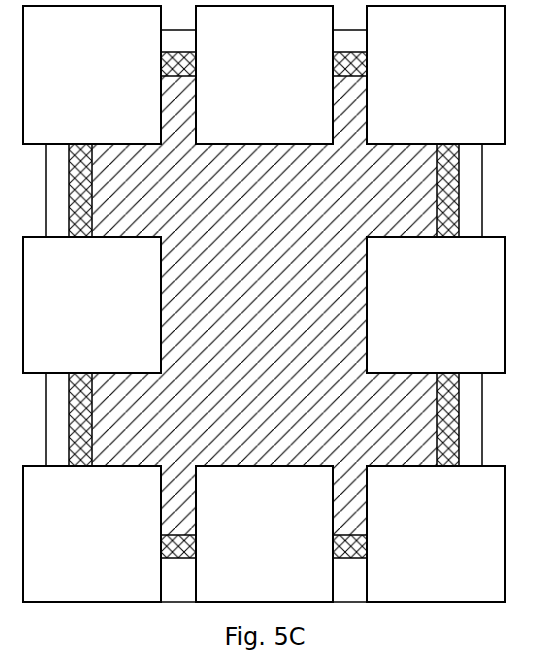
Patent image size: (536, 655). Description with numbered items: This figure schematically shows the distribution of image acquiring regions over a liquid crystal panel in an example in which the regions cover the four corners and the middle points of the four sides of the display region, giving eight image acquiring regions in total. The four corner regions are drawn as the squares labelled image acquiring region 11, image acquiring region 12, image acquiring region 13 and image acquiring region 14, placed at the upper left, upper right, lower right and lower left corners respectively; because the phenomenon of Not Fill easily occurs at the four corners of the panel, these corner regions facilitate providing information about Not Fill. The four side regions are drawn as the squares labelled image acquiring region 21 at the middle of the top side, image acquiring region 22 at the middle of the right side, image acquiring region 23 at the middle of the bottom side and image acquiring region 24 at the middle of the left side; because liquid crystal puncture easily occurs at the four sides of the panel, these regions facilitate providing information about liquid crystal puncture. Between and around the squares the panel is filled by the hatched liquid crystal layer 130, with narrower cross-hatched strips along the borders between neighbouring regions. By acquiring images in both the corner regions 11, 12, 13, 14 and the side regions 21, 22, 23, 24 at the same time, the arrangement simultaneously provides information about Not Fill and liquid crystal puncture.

The image acquiring region 11 is at (92, 75).
The image acquiring region 12 is at (436, 75).
The image acquiring region 13 is at (436, 534).
The image acquiring region 14 is at (92, 534).
The image acquiring region 21 is at (264, 75).
The image acquiring region 22 is at (436, 305).
The image acquiring region 23 is at (264, 534).
The image acquiring region 24 is at (92, 305).
The liquid crystal layer 130 is at (264, 305).